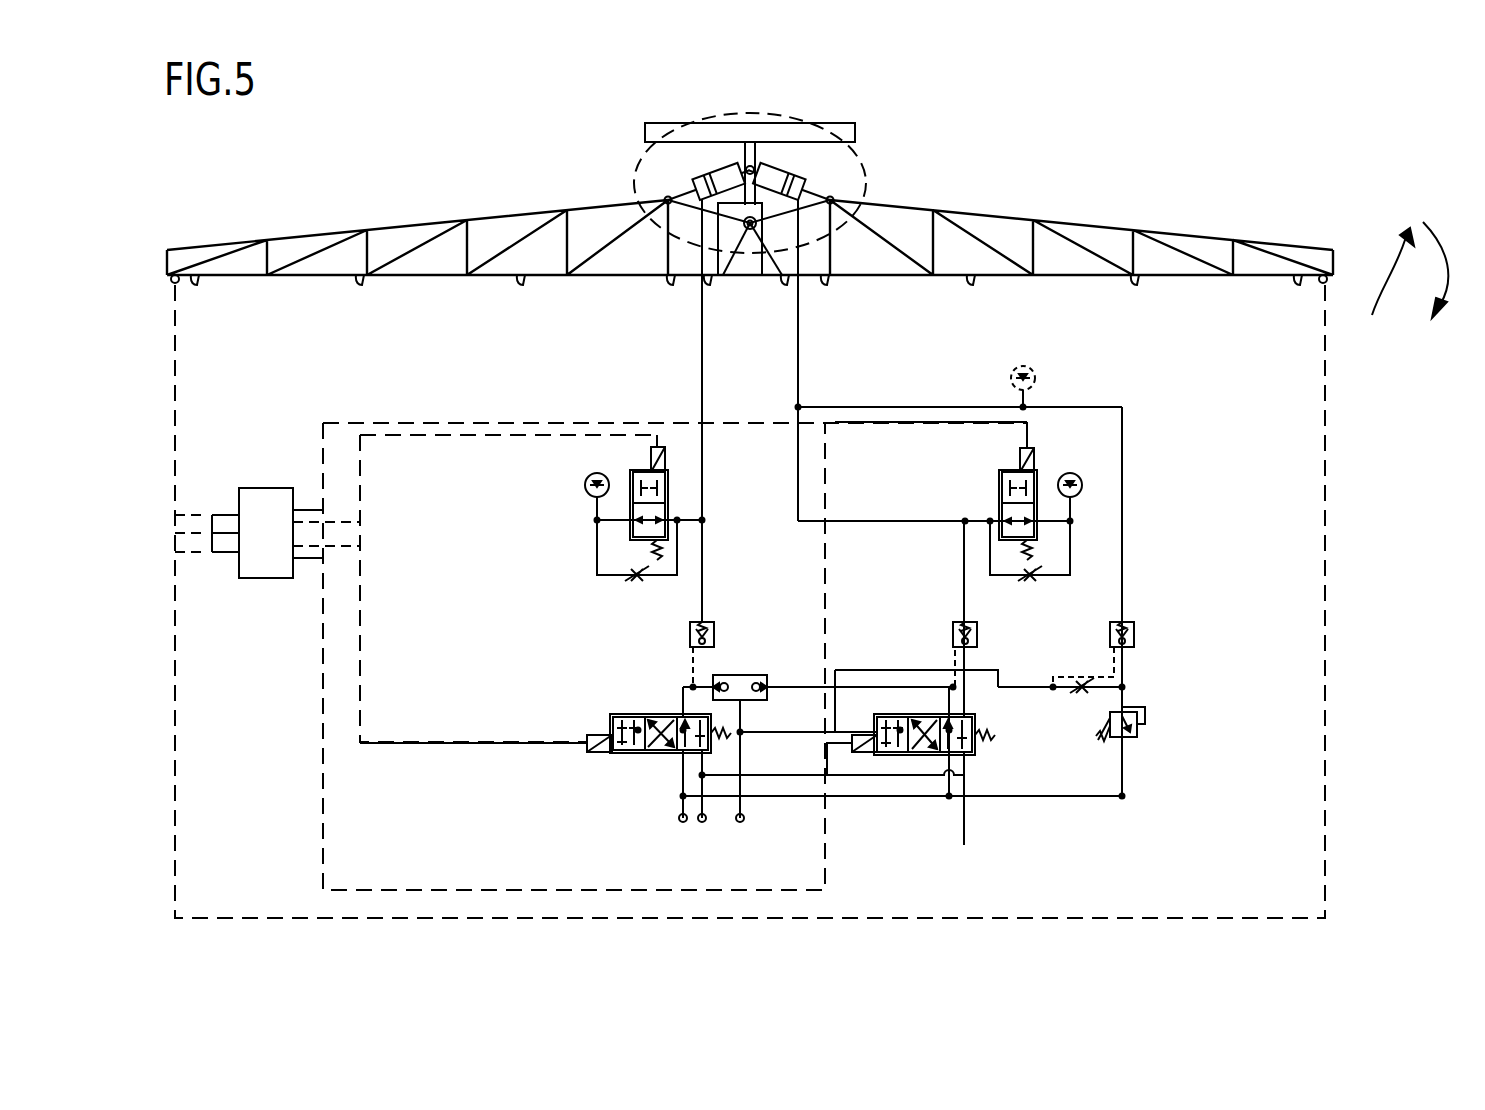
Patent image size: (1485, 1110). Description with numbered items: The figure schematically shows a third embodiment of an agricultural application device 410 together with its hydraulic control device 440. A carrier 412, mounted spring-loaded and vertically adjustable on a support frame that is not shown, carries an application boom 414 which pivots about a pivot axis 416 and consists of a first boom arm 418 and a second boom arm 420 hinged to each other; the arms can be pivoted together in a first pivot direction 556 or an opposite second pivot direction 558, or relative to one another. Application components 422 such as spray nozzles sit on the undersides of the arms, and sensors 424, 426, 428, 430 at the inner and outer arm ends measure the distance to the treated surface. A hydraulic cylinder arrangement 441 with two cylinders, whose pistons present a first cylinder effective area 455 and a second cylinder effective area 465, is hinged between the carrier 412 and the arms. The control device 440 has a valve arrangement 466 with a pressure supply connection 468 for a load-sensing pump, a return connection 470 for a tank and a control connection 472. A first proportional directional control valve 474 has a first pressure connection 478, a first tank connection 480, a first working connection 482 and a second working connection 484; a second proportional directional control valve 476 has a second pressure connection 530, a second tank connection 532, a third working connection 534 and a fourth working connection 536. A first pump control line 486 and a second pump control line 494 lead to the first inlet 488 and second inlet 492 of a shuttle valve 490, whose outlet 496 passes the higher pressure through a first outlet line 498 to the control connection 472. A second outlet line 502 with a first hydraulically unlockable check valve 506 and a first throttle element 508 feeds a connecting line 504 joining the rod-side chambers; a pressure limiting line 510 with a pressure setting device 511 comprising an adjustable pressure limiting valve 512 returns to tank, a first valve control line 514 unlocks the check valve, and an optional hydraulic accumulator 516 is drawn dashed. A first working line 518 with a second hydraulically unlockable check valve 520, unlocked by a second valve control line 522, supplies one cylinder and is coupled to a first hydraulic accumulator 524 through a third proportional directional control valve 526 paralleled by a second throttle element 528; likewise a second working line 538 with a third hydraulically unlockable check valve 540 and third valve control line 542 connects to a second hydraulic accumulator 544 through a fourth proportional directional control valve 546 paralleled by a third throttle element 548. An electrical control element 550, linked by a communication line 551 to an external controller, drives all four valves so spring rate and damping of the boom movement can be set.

The application device 410 is at (1145, 150).
The carrier 412 is at (645, 128).
The application boom 414 is at (750, 184).
The pivot axis 416 is at (745, 160).
The first boom arm 418 is at (1197, 236).
The second boom arm 420 is at (300, 238).
The application components 422 is at (200, 286).
The sensor 424 is at (708, 283).
The sensor 426 is at (782, 283).
The sensor 428 is at (1328, 284).
The sensor 430 is at (170, 284).
The control device 440 is at (530, 420).
The hydraulic cylinder arrangement 441 is at (800, 148).
The first cylinder effective area 455 is at (835, 178).
The second cylinder effective area 465 is at (690, 185).
The valve arrangement 466 is at (590, 718).
The pressure supply connection 468 is at (702, 823).
The return connection 470 is at (680, 823).
The control connection 472 is at (742, 823).
The first proportional directional control valve 474 is at (885, 780).
The second proportional directional control valve 476 is at (608, 755).
The first pressure connection 478 is at (972, 755).
The first tank connection 480 is at (964, 845).
The first working connection 482 is at (945, 712).
The second working connection 484 is at (975, 712).
The first pump control line 486 is at (830, 668).
The first inlet 488 is at (762, 683).
The shuttle valve 490 is at (735, 680).
The second inlet 492 is at (706, 665).
The second pump control line 494 is at (683, 690).
The outlet 496 is at (745, 705).
The first outlet line 498 is at (745, 745).
The second outlet line 502 is at (1122, 478).
The connecting line 504 is at (748, 232).
The first hydraulically unlockable check valve 506 is at (1135, 633).
The first throttle element 508 is at (1082, 693).
The pressure limiting line 510 is at (1125, 770).
The pressure setting device 511 is at (1160, 708).
The pressure limiting valve 512 is at (1130, 738).
The first valve control line 514 is at (1085, 678).
The hydraulic accumulator 516 is at (1036, 385).
The first working line 518 is at (850, 521).
The second hydraulically unlockable check valve 520 is at (980, 635).
The second valve control line 522 is at (952, 650).
The first hydraulic accumulator 524 is at (1083, 490).
The third proportional directional control valve 526 is at (1015, 468).
The second throttle element 528 is at (1030, 580).
The second pressure connection 530 is at (680, 795).
The second tank connection 532 is at (680, 770).
The third working connection 534 is at (615, 716).
The fourth working connection 536 is at (683, 710).
The second working line 538 is at (702, 482).
The third hydraulically unlockable check valve 540 is at (718, 618).
The third valve control line 542 is at (693, 660).
The second hydraulic accumulator 544 is at (588, 490).
The fourth proportional directional control valve 546 is at (648, 468).
The third throttle element 548 is at (632, 577).
The electrical control element 550 is at (262, 505).
The communication line 551 is at (200, 533).
The first pivot direction 556 is at (1400, 228).
The second pivot direction 558 is at (1428, 218).